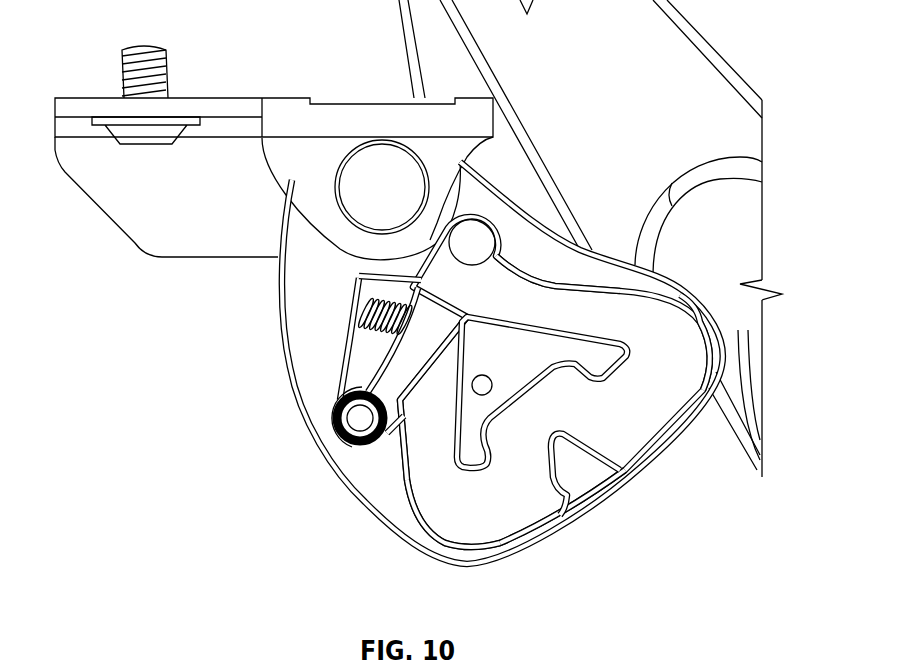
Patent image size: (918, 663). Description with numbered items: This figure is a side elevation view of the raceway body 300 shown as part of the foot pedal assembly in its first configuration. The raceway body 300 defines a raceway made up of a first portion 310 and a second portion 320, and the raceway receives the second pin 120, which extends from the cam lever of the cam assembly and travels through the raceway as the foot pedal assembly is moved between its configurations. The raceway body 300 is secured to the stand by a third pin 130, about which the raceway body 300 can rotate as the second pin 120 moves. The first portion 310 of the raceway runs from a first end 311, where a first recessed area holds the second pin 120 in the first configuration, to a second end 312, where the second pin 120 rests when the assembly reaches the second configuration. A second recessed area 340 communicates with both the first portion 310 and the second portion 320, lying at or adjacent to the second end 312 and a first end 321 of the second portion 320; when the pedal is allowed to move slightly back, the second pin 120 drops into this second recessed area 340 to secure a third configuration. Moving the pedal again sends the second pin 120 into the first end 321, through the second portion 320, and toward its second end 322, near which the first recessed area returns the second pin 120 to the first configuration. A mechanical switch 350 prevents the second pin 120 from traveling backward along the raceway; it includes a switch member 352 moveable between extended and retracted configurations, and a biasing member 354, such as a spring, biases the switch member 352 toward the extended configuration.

The second pin 120 is at (480, 237).
The third pin 130 is at (365, 162).
The raceway body 300 is at (683, 435).
The first portion of the raceway 310 is at (526, 379).
The first end of the first portion of the raceway 311 is at (482, 293).
The second end of the first portion of the raceway 312 is at (627, 402).
The second portion of the raceway 320 is at (438, 503).
The first end of the second portion of the raceway 321 is at (547, 488).
The second end of the second portion of the raceway 322 is at (422, 415).
The second recessed area 340 is at (583, 415).
The mechanical switch 350 is at (333, 443).
The switch member 352 is at (387, 380).
The biasing member 354 is at (360, 312).